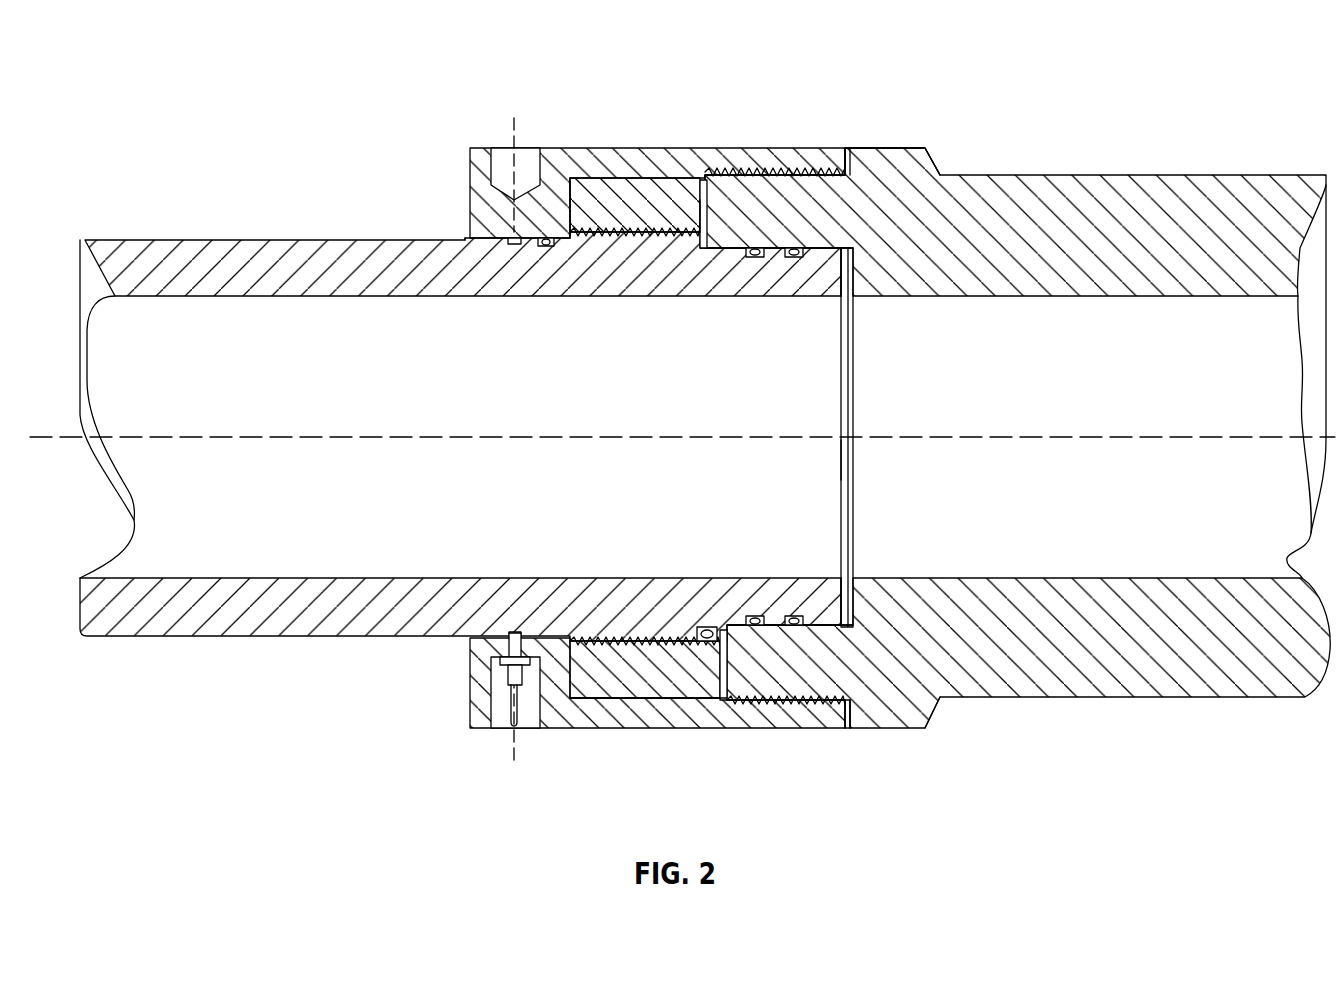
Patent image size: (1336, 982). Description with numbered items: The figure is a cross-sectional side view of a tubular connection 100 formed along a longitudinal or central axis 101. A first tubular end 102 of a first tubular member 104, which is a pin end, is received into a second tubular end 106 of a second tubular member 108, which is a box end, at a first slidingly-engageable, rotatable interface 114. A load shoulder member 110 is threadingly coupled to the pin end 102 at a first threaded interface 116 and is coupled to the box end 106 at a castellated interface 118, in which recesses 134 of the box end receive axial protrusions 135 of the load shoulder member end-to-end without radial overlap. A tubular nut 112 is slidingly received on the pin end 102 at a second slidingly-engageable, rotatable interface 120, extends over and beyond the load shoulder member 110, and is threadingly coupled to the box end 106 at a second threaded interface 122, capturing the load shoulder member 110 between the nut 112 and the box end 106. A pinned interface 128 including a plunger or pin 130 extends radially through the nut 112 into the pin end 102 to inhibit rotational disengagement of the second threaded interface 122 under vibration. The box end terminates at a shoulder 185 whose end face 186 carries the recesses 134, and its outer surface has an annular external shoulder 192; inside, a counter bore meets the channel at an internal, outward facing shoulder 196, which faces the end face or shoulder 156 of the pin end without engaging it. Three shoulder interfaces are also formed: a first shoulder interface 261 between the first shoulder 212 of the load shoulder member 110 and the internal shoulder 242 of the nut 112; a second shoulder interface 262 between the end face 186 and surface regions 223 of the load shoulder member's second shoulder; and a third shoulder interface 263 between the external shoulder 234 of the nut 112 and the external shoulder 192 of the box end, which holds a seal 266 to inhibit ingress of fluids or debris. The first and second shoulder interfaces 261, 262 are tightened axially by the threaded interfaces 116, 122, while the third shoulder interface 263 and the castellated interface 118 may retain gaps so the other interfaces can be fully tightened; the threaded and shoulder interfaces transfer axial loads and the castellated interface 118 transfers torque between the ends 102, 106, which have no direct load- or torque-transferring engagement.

The tubular connection 100 is at (160, 70).
The central axis 101 is at (291, 436).
The pin end 102 is at (825, 357).
The first tubular member 104 is at (238, 252).
The box end 106 is at (893, 183).
The second tubular member 108 is at (1108, 185).
The load shoulder member 110 is at (640, 188).
The tubular nut 112 is at (588, 160).
The first slidingly-engageable, rotatable interface 114 is at (712, 197).
The first threaded interface 116 is at (578, 221).
The castellated interface 118 is at (707, 695).
The second slidingly-engageable, rotatable interface 120 is at (490, 242).
The second threaded interface 122 is at (784, 171).
The pinned interface 128 is at (513, 630).
The plunger or pin 130 is at (512, 698).
The recesses 134 is at (713, 630).
The axial protrusions 135 is at (700, 663).
The end face or shoulder 156 is at (855, 508).
The shoulder 185 is at (706, 632).
The end face 186 is at (697, 217).
The external shoulder 192 is at (836, 163).
The internal shoulder 196 is at (838, 462).
The first shoulder 212 is at (516, 246).
The surface regions 223 is at (740, 243).
The external shoulder 234 is at (857, 174).
The internal shoulder 242 is at (548, 247).
The first shoulder interface 261 is at (567, 213).
The second shoulder interface 262 is at (716, 208).
The third shoulder interface 263 is at (848, 152).
The seal 266 is at (850, 712).